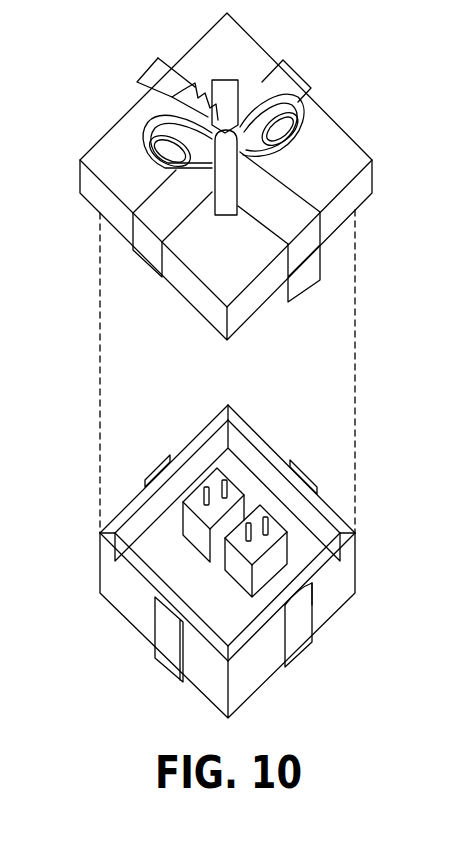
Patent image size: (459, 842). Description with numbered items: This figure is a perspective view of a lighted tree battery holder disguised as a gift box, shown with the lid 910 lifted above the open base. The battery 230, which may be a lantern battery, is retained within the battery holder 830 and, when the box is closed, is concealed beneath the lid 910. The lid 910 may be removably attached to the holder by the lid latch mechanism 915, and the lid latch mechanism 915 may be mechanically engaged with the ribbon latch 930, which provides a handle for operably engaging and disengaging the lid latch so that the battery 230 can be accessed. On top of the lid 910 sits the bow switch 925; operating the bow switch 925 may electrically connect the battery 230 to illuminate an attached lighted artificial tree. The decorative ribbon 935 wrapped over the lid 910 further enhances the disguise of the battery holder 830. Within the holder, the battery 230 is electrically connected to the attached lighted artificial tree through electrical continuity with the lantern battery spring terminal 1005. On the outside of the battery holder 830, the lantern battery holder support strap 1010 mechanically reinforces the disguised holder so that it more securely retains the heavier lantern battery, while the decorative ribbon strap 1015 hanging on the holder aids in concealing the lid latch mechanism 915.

The lid 910 is at (327, 118).
The lid latch mechanism 915 is at (320, 273).
The bow switch 925 is at (287, 90).
The ribbon latch 930 is at (247, 153).
The decorative ribbon 935 is at (133, 228).
The battery holder 830 is at (290, 552).
The battery 230 is at (233, 553).
The lantern battery spring terminal 1005 is at (267, 518).
The lantern battery holder support strap 1010 is at (312, 600).
The decorative ribbon strap 1015 is at (312, 637).